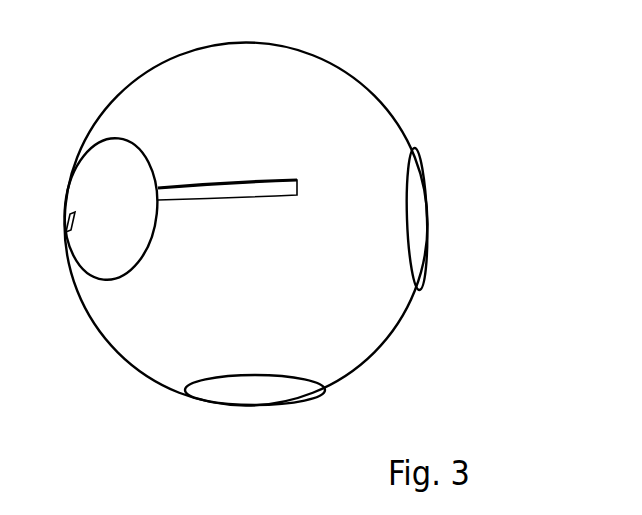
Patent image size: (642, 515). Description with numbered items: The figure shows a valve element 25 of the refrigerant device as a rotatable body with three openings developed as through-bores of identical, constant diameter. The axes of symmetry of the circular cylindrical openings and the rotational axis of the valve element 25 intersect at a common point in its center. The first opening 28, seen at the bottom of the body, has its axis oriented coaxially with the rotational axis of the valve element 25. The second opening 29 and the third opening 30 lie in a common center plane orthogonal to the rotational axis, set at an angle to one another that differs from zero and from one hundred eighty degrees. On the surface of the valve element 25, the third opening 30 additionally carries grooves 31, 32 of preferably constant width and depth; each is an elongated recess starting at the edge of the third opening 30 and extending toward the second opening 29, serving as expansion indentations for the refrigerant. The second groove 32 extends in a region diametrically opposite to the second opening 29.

The valve element 25 is at (259, 207).
The first opening 28 is at (239, 394).
The second opening 29 is at (416, 207).
The third opening 30 is at (98, 185).
The first groove 31 is at (215, 192).
The second groove 32 is at (66, 231).